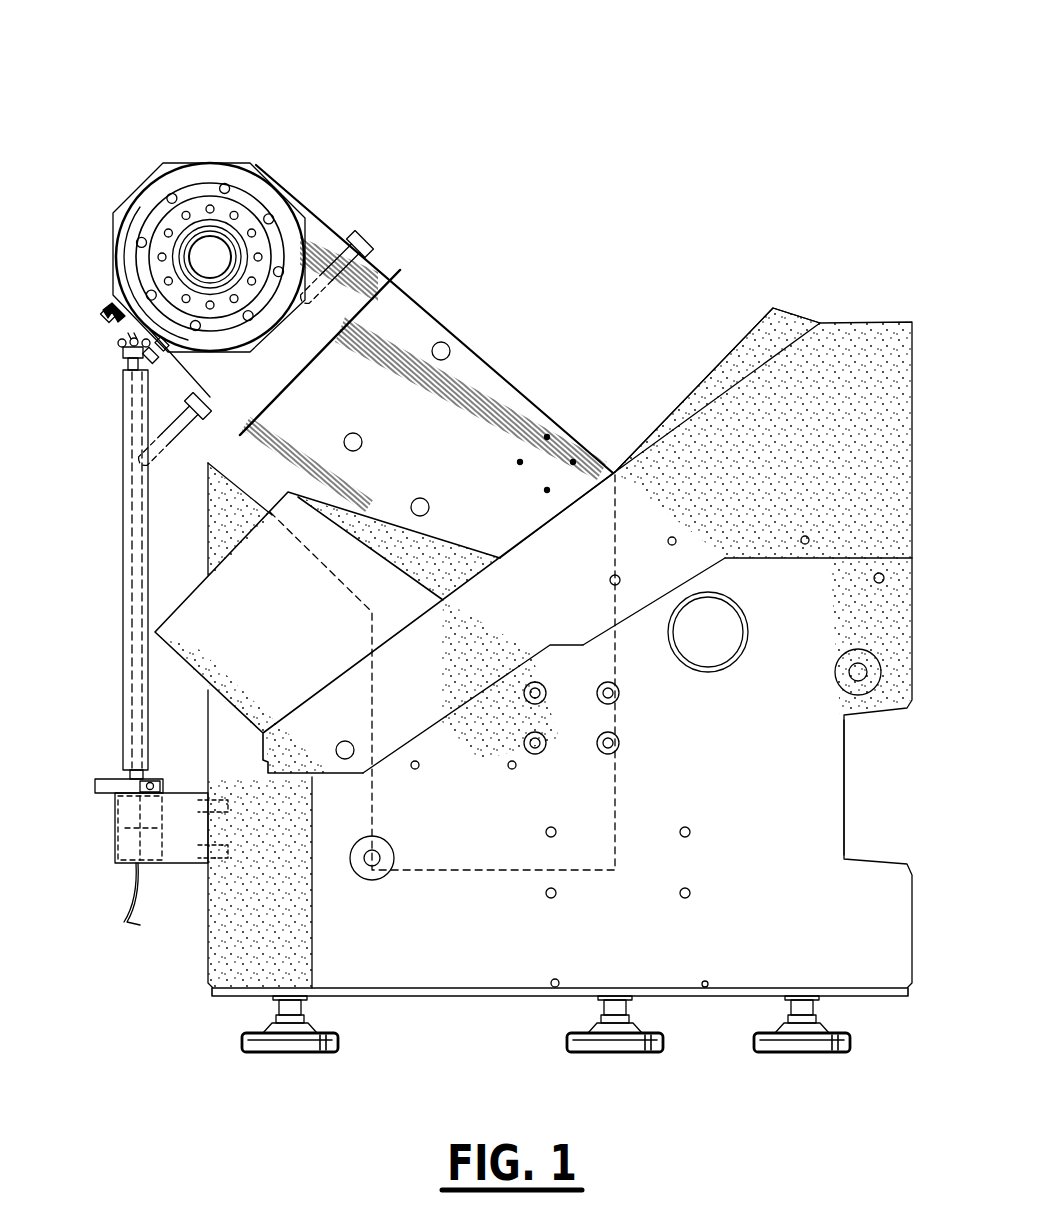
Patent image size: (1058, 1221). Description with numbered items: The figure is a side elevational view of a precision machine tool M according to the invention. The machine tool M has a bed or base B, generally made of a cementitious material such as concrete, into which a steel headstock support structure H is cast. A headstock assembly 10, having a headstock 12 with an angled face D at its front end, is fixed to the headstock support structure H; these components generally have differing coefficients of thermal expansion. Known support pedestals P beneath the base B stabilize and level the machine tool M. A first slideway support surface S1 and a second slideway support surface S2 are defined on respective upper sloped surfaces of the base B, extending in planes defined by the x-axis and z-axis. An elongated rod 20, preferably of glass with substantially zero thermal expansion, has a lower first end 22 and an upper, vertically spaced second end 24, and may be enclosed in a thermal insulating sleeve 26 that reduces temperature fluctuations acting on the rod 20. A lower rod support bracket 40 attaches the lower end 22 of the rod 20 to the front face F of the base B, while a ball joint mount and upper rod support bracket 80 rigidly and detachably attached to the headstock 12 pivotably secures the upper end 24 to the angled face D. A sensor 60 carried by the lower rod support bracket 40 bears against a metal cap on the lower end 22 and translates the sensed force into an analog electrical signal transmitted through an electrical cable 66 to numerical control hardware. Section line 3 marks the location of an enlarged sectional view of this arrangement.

The headstock assembly 10 is at (325, 248).
The headstock 12 is at (270, 195).
The elongated rod 20 is at (118, 368).
The lower first end 22 is at (152, 781).
The upper second end 24 is at (119, 357).
The thermal insulating sleeve 26 is at (124, 578).
The lower rod support bracket 40 is at (180, 872).
The sensor 60 is at (127, 822).
The electrical cable 66 is at (124, 906).
The ball joint mount and upper rod support bracket 80 is at (108, 303).
The section line 3- 3 is at (83, 550).
The headstock support structure H is at (505, 352).
The angled face D is at (183, 374).
The first slideway support surface S1 is at (198, 590).
The second slideway support surface S2 is at (722, 362).
The precision machine tool M is at (852, 765).
The front face F is at (207, 975).
The base B is at (476, 988).
The support pedestals P is at (309, 1053).